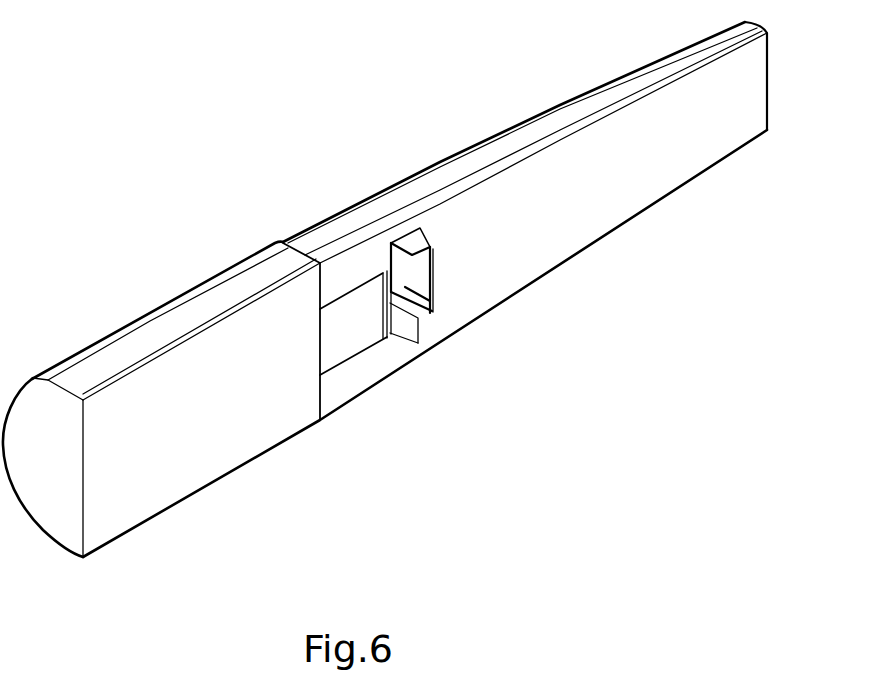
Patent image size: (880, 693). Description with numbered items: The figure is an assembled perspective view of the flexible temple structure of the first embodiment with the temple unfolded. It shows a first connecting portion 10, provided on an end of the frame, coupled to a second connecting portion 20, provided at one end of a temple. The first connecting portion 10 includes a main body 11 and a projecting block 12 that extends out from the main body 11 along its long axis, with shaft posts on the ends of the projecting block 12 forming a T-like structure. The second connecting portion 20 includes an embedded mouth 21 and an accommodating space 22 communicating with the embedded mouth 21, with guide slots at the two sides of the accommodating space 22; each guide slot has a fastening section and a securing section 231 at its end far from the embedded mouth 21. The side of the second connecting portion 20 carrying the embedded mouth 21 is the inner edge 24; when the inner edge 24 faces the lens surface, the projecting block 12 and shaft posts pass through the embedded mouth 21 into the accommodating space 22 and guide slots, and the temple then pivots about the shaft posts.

The first connecting portion 10 is at (152, 309).
The main body 11 is at (250, 428).
The projecting block 12 is at (350, 335).
The second connecting portion 20 is at (591, 90).
The embedded mouth 21 is at (433, 278).
The accommodating space 22 is at (425, 297).
The inner edge 24 is at (555, 233).
The securing section 231 is at (396, 251).